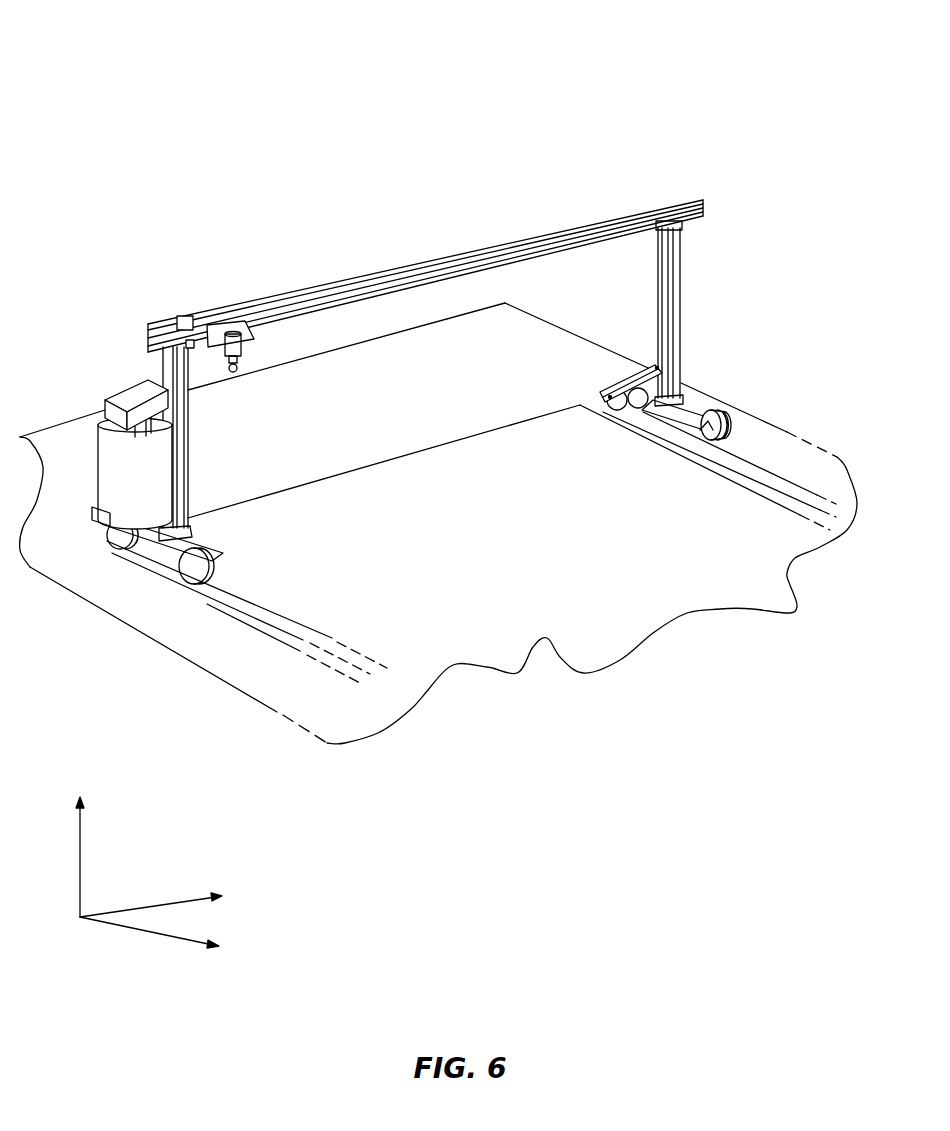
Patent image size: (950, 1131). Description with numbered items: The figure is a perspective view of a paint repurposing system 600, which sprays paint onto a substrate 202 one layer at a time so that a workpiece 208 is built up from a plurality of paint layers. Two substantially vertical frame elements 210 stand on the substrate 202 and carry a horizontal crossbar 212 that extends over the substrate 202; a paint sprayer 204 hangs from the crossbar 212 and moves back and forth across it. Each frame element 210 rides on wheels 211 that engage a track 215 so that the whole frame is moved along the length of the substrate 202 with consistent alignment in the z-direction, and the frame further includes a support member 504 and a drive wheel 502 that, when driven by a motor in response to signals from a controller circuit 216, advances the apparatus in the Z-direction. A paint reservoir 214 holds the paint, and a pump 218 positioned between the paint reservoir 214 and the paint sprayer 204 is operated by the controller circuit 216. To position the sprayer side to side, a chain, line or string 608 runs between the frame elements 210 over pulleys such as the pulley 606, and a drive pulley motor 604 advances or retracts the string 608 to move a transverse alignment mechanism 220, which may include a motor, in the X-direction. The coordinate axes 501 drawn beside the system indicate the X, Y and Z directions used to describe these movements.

The paint repurposing system 600 is at (111, 44).
The substrate 202 is at (133, 597).
The paint sprayer 204 is at (243, 370).
The workpiece 208 is at (648, 612).
The frame elements 210 is at (670, 327).
The wheels 211 is at (727, 413).
The crossbar 212 is at (436, 266).
The paint reservoir 214 is at (100, 462).
The track 215 is at (773, 465).
The controller circuit 216 is at (109, 391).
The pump 218 is at (104, 411).
The transverse alignment mechanism 220 is at (242, 322).
The coordinate axes 501 is at (153, 935).
The drive wheel 502 is at (603, 393).
The support member 504 is at (650, 366).
The drive pulley motor 604 is at (178, 318).
The pulley 606 is at (190, 345).
The string 608 is at (347, 308).